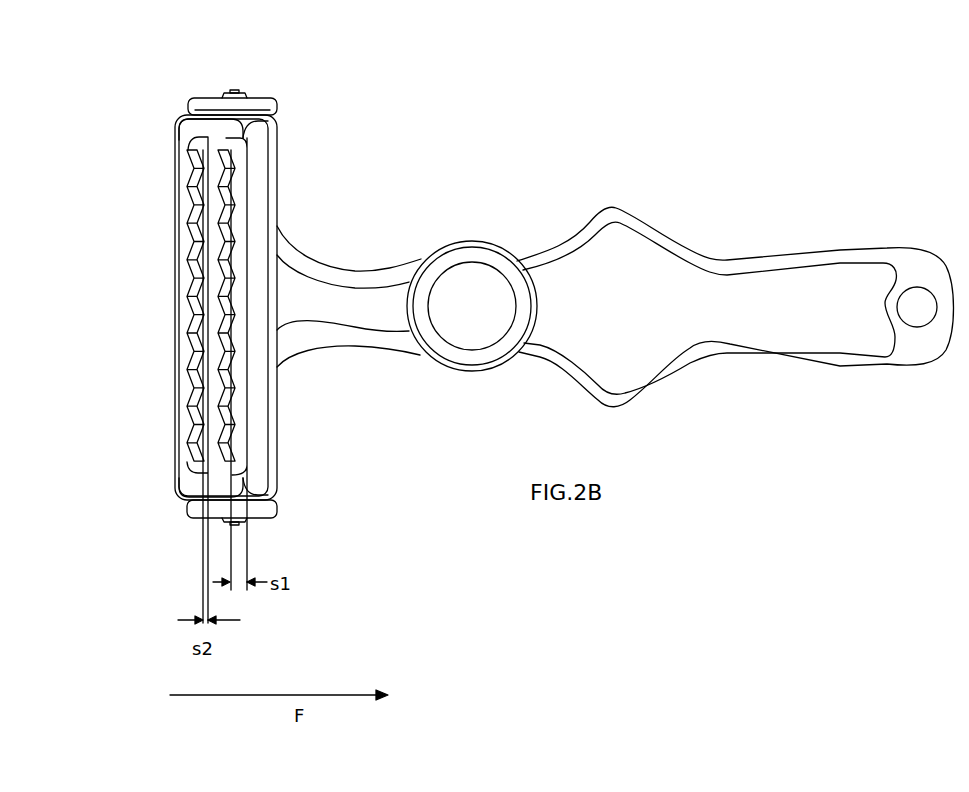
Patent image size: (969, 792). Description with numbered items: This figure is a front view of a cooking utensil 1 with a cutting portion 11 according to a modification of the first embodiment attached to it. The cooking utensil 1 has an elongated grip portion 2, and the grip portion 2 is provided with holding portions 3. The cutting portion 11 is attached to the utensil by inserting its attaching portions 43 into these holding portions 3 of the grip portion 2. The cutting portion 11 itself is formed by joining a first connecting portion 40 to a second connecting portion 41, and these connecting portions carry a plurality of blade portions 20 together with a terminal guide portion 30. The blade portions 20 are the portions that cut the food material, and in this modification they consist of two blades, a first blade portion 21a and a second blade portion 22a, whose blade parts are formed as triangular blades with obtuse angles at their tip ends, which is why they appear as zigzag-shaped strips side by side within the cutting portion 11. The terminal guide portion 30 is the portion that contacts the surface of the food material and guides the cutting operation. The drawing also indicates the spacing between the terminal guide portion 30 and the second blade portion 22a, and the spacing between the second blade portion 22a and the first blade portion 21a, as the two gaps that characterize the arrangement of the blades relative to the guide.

The cooking utensil 1 is at (773, 148).
The grip portion 2 is at (824, 257).
The holding portion 3 is at (192, 99).
The cutting portion 11 is at (104, 220).
The blade portions 20 is at (243, 380).
The first blade portion 21a is at (183, 367).
The second blade portion 22a is at (219, 236).
The terminal guide portion 30 is at (261, 385).
The first connecting portion 40 is at (212, 130).
The second connecting portion 41 is at (244, 128).
The attaching portion 43 is at (234, 90).